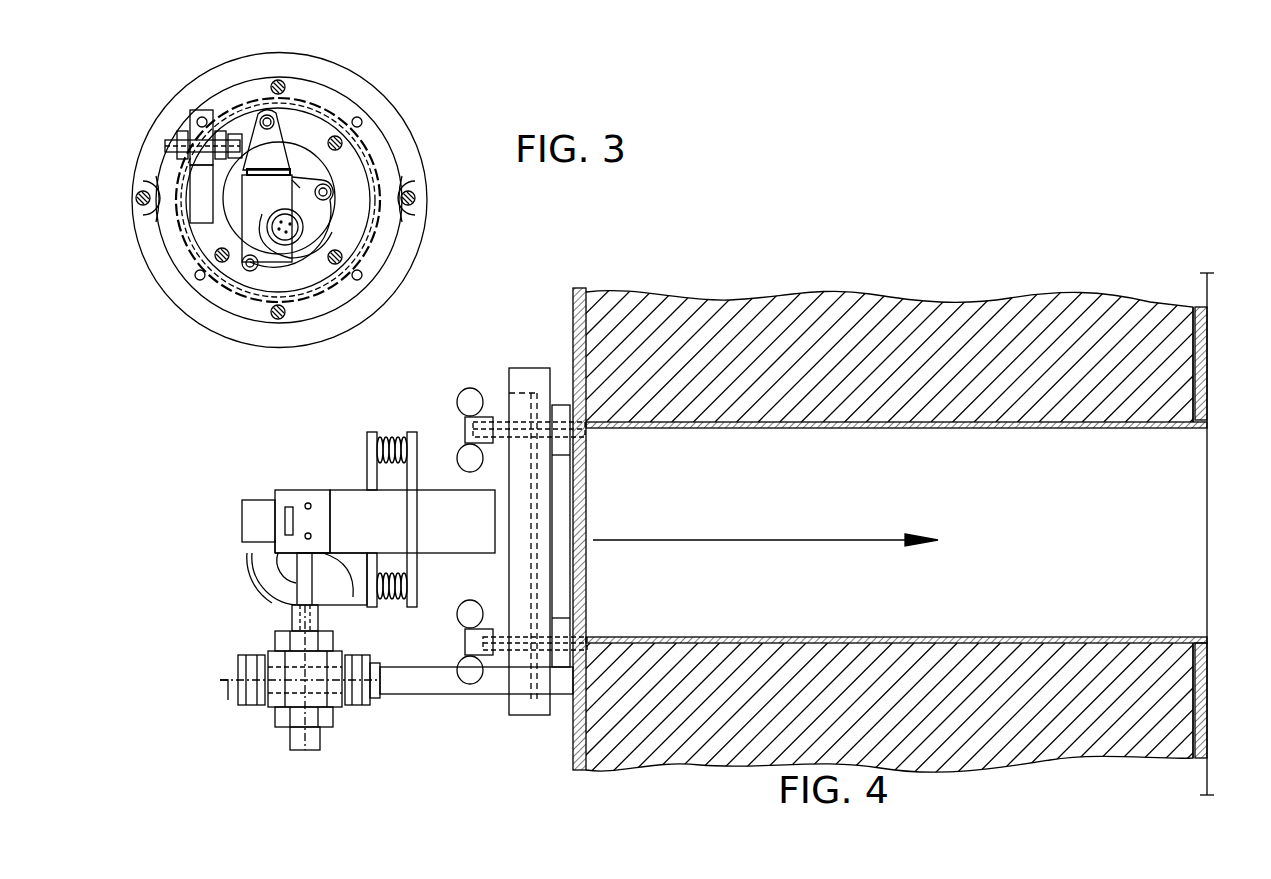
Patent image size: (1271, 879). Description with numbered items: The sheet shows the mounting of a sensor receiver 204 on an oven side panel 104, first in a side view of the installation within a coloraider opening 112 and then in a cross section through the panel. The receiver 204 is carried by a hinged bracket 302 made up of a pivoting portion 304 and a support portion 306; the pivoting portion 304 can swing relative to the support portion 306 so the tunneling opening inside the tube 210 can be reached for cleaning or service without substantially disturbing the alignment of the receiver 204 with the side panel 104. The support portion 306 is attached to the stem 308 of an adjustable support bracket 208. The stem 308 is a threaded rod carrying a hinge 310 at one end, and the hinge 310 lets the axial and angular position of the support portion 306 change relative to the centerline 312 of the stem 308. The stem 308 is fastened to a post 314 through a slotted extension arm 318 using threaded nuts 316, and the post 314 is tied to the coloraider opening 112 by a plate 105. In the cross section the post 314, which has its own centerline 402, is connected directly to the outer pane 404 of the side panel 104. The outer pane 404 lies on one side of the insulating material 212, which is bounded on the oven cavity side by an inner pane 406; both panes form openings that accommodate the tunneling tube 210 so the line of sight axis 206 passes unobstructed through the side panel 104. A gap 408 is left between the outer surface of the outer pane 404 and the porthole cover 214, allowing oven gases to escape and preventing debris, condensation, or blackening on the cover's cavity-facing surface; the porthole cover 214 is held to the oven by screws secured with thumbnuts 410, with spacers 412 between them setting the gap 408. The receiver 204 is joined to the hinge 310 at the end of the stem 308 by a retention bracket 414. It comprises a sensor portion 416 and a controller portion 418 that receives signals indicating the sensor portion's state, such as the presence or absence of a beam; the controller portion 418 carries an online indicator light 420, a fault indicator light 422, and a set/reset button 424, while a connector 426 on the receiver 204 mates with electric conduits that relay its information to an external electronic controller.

In FIG. 4, the side panel 104 is at (1196, 775).
In FIG. 3, the plate 105 is at (393, 175).
In FIG. 3, the coloraider opening 112 is at (388, 98).
In FIG. 3, the receiver 204 is at (277, 228).
In FIG. 4, the receiver 204 is at (293, 500).
In FIG. 4, the line of sight axis 206 is at (762, 540).
In FIG. 3, the adjustable support bracket 208 is at (156, 69).
In FIG. 4, the adjustable support bracket 208 is at (266, 748).
In FIG. 3, the tube 210 is at (325, 110).
In FIG. 4, the tube 210 is at (1090, 427).
In FIG. 4, the insulating material 212 is at (893, 335).
In FIG. 3, the porthole cover 214 is at (375, 198).
In FIG. 4, the porthole cover 214 is at (528, 705).
In FIG. 3, the hinged bracket 302 is at (332, 176).
In FIG. 3, the pivoting portion 304 is at (250, 207).
In FIG. 3, the support portion 306 is at (278, 140).
In FIG. 3, the stem 308 is at (235, 136).
In FIG. 4, the stem 308 is at (293, 620).
In FIG. 3, the hinge 310 is at (255, 137).
In FIG. 4, the hinge 310 is at (280, 582).
In FIG. 3, the centerline 312 is at (157, 142).
In FIG. 4, the centerline 312 is at (303, 680).
In FIG. 3, the post 314 is at (200, 118).
In FIG. 4, the post 314 is at (488, 685).
In FIG. 3, the threaded nuts 316 is at (178, 160).
In FIG. 4, the threaded nuts 316 is at (247, 662).
In FIG. 3, the slotted extension arm 318 is at (205, 192).
In FIG. 4, the centerline 402 is at (228, 700).
In FIG. 4, the outer pane 404 is at (573, 770).
In FIG. 4, the inner pane 406 is at (1200, 370).
In FIG. 4, the gap 408 is at (560, 383).
In FIG. 4, the thumbnuts 410 is at (462, 398).
In FIG. 4, the spacers 412 is at (562, 407).
In FIG. 4, the retention bracket 414 is at (372, 460).
In FIG. 4, the sensor portion 416 is at (445, 513).
In FIG. 4, the controller portion 418 is at (287, 543).
In FIG. 4, the online indicator light 420 is at (308, 539).
In FIG. 4, the fault indicator light 422 is at (308, 503).
In FIG. 4, the set/reset button 424 is at (290, 507).
In FIG. 4, the connector 426 is at (250, 523).